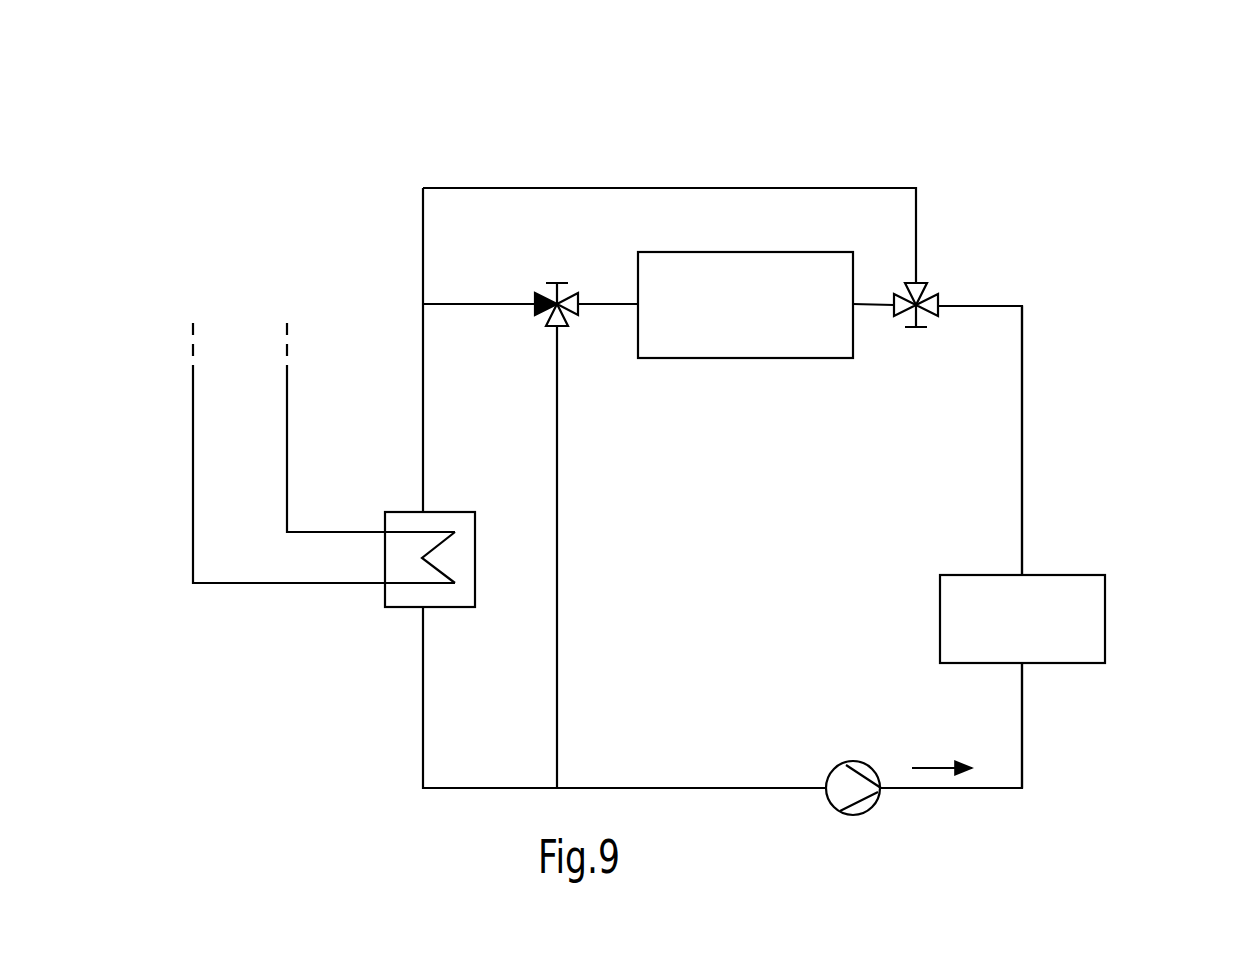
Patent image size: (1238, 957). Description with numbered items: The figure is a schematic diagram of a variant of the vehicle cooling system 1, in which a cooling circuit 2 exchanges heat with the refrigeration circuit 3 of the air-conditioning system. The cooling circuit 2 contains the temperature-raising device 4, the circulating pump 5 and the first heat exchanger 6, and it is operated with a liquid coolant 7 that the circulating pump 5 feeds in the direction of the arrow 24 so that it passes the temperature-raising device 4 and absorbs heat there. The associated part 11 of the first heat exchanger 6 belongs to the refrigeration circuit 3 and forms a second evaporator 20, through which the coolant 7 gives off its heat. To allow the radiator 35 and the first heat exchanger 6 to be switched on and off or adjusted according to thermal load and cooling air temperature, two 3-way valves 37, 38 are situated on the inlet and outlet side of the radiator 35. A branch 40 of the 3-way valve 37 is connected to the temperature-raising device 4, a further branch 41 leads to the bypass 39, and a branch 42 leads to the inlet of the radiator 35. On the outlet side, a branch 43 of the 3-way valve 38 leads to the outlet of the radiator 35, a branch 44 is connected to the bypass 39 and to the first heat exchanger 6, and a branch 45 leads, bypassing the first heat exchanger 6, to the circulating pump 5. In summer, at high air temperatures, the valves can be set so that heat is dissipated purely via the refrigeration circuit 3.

The vehicle cooling system 1 is at (195, 172).
The cooling circuit 2 is at (1136, 270).
The refrigeration circuit 3 is at (238, 333).
The temperature-raising device 4 is at (1055, 598).
The circulating pump 5 is at (862, 768).
The first heat exchanger 6 is at (440, 522).
The coolant 7 is at (1022, 418).
The associated part of the first heat exchanger 11 is at (392, 495).
The second evaporator 20 is at (427, 572).
The arrow 24 is at (940, 768).
The radiator 35 is at (755, 328).
The 3-way valve 37 is at (939, 296).
The 3-way valve 38 is at (557, 321).
The bypass 39 is at (712, 188).
The branch 40 is at (930, 320).
The further branch 41 is at (922, 284).
The branch 42 is at (898, 312).
The branch 43 is at (572, 318).
The branch 44 is at (540, 300).
The branch 45 is at (553, 327).